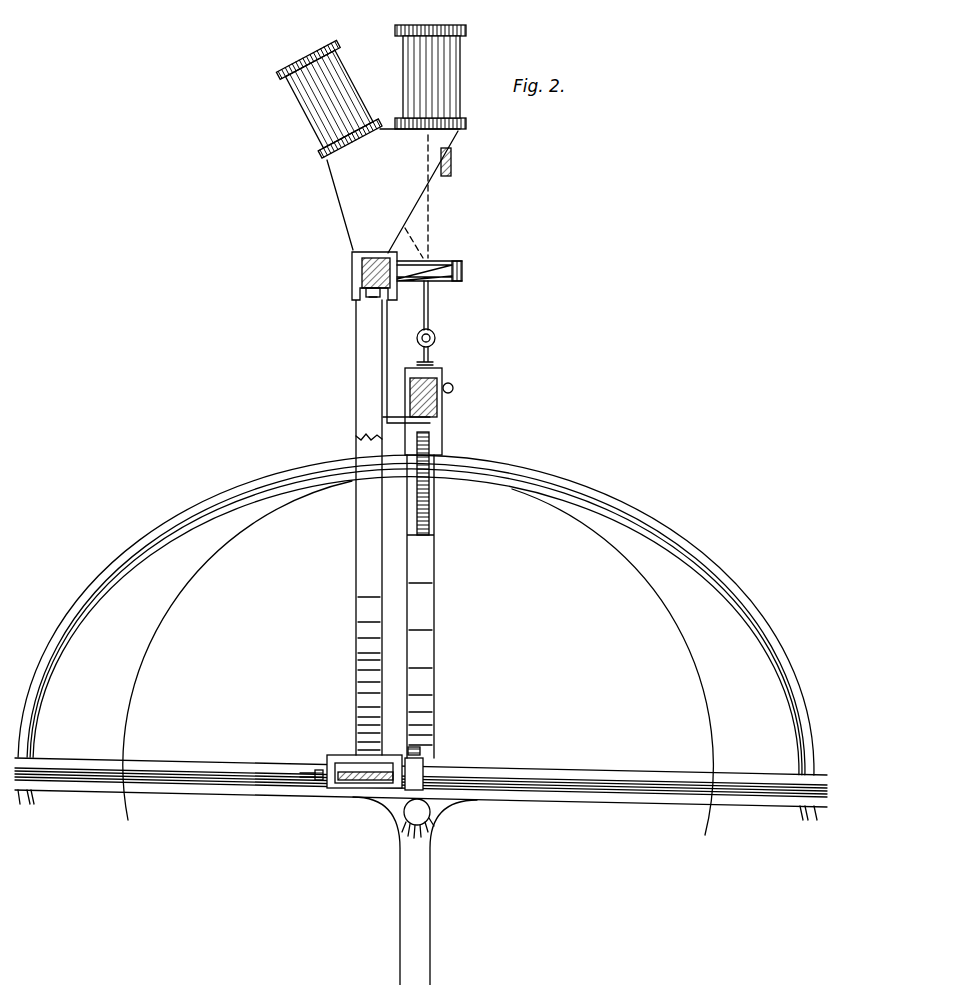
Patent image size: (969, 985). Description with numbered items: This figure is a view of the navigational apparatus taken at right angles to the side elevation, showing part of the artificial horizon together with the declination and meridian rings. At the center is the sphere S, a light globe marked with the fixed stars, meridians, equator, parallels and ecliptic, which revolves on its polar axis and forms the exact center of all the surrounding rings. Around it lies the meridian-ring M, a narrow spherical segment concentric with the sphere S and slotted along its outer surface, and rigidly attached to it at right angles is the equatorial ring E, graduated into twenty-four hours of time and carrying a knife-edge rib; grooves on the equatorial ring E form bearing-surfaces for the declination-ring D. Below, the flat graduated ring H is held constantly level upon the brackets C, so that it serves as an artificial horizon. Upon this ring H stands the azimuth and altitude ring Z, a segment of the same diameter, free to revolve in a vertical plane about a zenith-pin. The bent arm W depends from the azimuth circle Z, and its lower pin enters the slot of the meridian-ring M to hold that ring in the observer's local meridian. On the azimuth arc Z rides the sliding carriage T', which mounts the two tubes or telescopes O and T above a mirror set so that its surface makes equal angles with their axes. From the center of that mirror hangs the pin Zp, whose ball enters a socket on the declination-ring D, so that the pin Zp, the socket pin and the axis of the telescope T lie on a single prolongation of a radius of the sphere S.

The telescope O is at (307, 67).
The telescope T is at (421, 77).
The azimuth and altitude ring Z is at (361, 266).
The sliding carriage T' is at (432, 282).
The pin Zp is at (429, 313).
The bent arm W is at (382, 360).
The declination-ring D is at (442, 407).
The meridian-ring M is at (430, 443).
The equatorial ring E is at (549, 458).
The sphere S is at (175, 657).
The flat graduated ring H is at (600, 776).
The brackets C is at (428, 884).